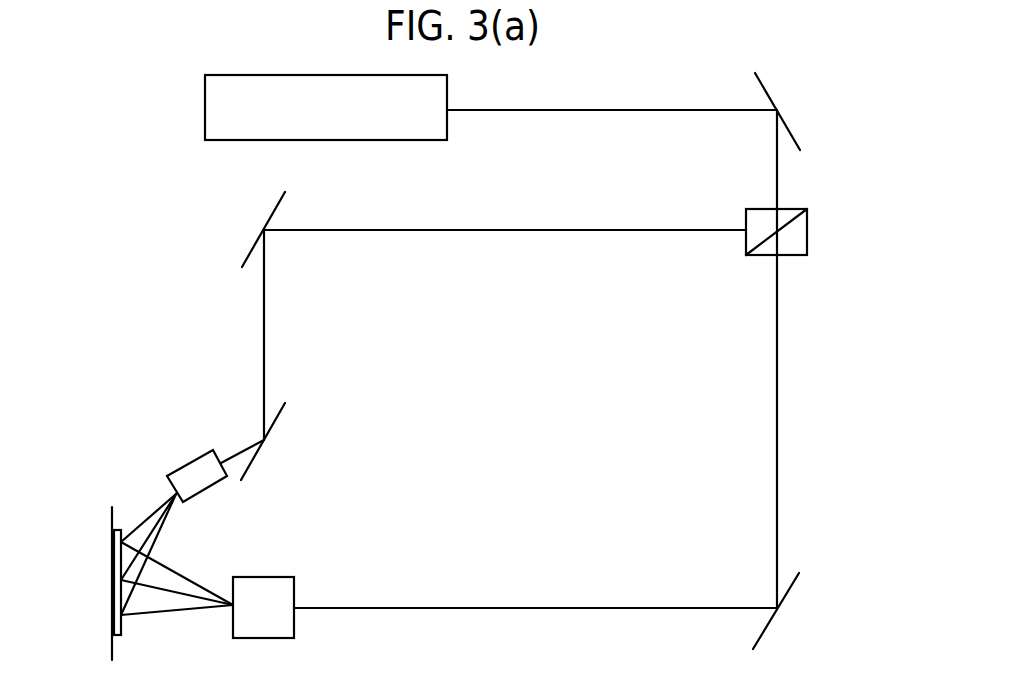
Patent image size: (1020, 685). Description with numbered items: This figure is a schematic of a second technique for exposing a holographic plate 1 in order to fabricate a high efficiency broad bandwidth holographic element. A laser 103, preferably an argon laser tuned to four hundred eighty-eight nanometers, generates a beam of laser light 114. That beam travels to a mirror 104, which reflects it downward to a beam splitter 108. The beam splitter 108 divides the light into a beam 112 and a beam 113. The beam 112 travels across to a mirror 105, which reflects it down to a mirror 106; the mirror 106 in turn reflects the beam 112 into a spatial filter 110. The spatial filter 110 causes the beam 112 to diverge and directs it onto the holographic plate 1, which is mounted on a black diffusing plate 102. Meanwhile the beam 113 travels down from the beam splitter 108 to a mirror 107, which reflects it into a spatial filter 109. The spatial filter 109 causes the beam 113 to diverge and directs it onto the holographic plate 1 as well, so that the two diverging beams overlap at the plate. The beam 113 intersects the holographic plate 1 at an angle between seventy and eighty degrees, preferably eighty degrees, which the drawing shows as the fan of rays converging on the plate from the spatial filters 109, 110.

The holographic plate 1 is at (121, 629).
The black diffusing plate 102 is at (112, 512).
The laser 103 is at (205, 123).
The mirror 104 is at (785, 125).
The mirror 105 is at (255, 243).
The mirror 106 is at (273, 428).
The mirror 107 is at (768, 625).
The beam splitter 108 is at (807, 240).
The spatial filter 109 is at (267, 577).
The spatial filter 110 is at (198, 452).
The beam 112 is at (588, 230).
The beam 113 is at (777, 365).
The beam of laser light 114 is at (588, 110).